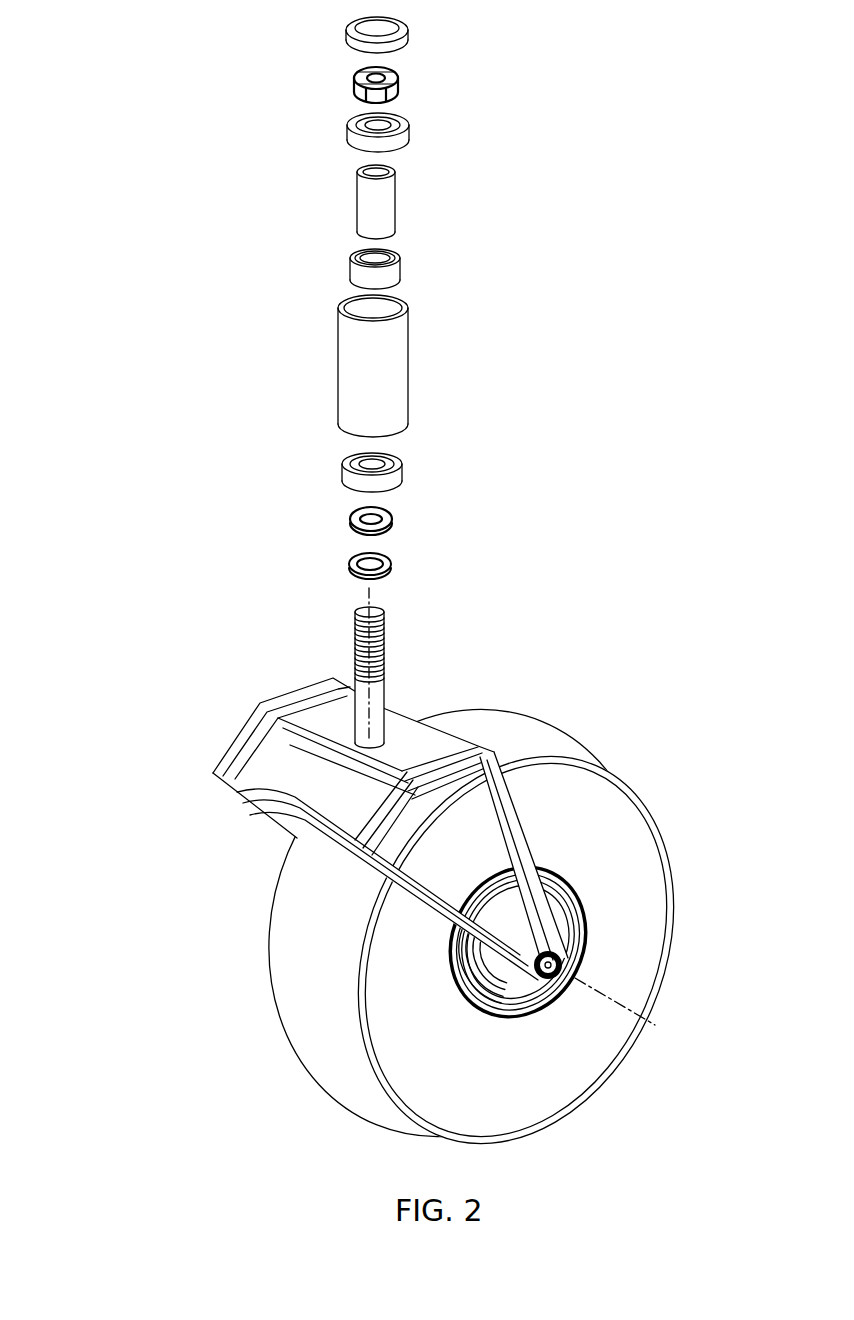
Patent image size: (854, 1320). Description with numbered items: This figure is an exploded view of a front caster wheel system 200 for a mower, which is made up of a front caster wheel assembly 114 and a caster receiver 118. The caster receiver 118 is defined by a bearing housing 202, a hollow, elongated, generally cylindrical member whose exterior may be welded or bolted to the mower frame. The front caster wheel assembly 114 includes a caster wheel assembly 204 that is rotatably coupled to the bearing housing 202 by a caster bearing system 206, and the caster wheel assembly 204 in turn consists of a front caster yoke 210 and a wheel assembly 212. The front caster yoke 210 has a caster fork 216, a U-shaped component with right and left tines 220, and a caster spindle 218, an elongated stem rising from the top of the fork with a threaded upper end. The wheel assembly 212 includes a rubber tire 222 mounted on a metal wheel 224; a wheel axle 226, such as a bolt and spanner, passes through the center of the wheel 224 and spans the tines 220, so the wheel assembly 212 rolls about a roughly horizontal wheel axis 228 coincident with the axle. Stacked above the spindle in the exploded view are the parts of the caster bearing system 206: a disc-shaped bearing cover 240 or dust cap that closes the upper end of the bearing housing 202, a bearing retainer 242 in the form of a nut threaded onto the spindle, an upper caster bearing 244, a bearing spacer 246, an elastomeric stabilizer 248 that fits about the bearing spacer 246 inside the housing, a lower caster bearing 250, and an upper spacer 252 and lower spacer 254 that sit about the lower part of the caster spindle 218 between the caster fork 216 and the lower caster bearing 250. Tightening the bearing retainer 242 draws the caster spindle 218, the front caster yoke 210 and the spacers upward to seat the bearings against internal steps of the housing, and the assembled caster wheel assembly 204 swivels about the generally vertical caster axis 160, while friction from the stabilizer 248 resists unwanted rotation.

The front caster wheel system 200 is at (644, 89).
The front caster wheel assembly 114 is at (151, 594).
The caster receiver 118 is at (287, 339).
The caster bearing system 206 is at (287, 145).
The bearing cover 240 is at (411, 30).
The bearing retainer 242 is at (403, 82).
The upper caster bearing 244 is at (411, 132).
The bearing spacer 246 is at (399, 204).
The stabilizer 248 is at (405, 268).
The bearing housing 202 is at (413, 354).
The lower caster bearing 250 is at (406, 470).
The upper spacer 252 is at (394, 518).
The lower spacer 254 is at (396, 564).
The caster axis 160 is at (366, 605).
The caster spindle 218 is at (348, 662).
The caster wheel assembly 204 is at (236, 661).
The front caster yoke 210 is at (220, 723).
The caster fork 216 is at (225, 752).
The tines 220 is at (250, 813).
The wheel assembly 212 is at (618, 742).
The tire 222 is at (653, 815).
The wheel 224 is at (575, 882).
The wheel axle 226 is at (578, 958).
The wheel axis 228 is at (656, 1024).